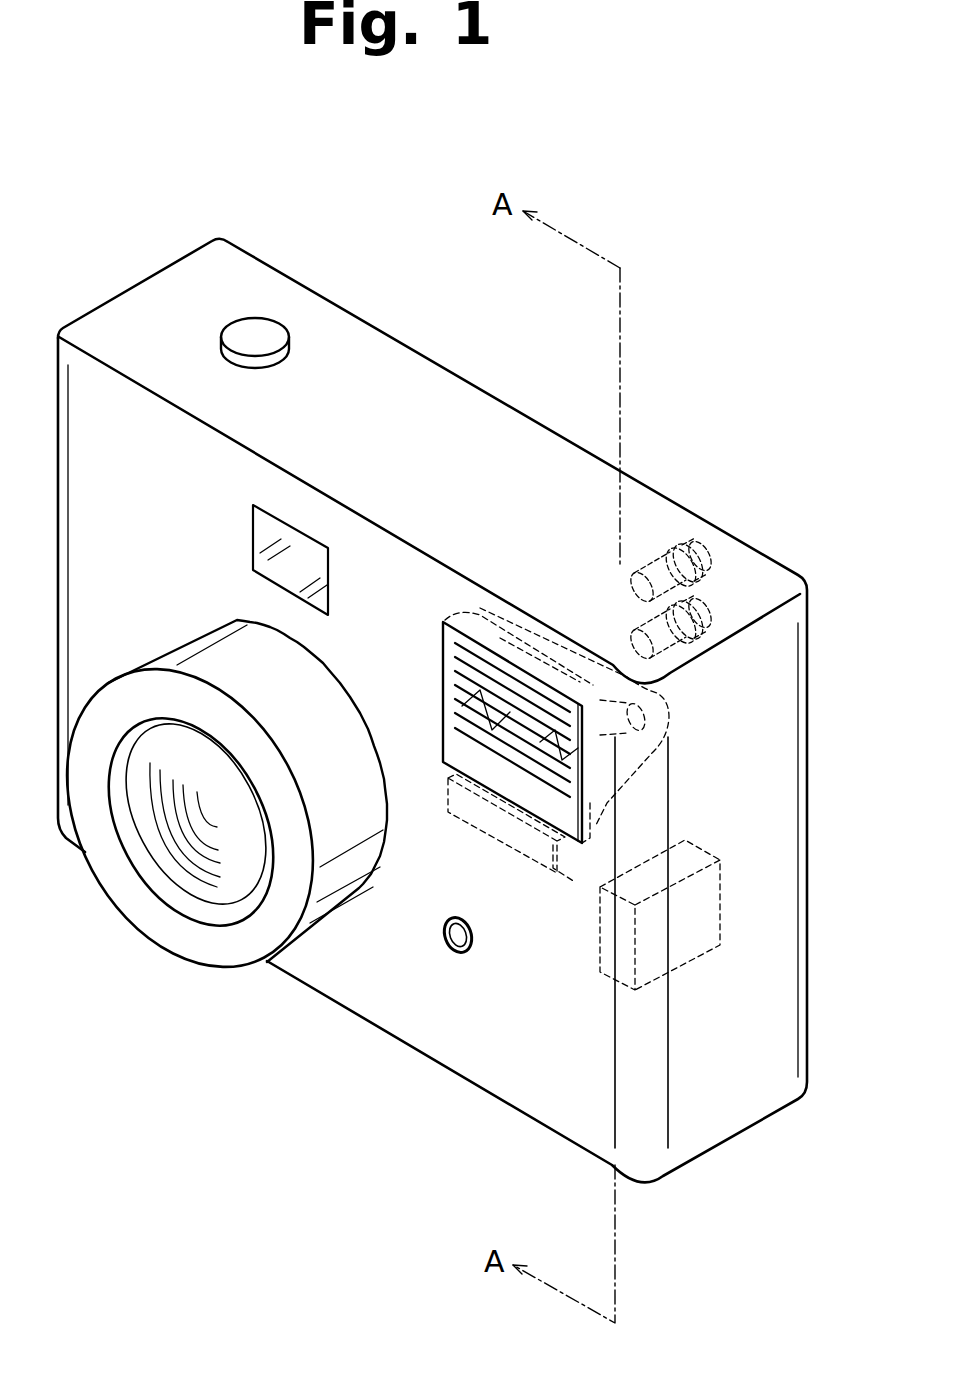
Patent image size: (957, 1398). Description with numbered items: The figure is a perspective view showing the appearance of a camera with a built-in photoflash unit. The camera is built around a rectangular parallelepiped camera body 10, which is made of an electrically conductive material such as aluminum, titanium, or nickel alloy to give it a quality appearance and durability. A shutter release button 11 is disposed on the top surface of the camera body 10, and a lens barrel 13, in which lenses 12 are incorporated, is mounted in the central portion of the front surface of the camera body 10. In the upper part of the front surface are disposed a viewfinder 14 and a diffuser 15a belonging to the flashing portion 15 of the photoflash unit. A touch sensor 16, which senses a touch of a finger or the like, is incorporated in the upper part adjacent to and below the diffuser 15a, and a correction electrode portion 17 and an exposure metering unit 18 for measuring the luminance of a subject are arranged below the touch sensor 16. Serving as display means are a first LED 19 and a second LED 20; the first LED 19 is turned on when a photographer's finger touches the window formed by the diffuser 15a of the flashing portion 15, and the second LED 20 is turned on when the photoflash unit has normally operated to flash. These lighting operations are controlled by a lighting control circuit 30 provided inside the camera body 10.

The camera body 10 is at (517, 427).
The shutter release button 11 is at (262, 325).
The lenses 12 is at (235, 890).
The lens barrel 13 is at (323, 898).
The viewfinder 14 is at (303, 550).
The flashing portion 15 is at (663, 777).
The diffuser 15a is at (443, 650).
The touch sensor 16 is at (567, 838).
The correction electrode portion 17 is at (500, 845).
The exposure metering unit 18 is at (447, 941).
The first LED 19 is at (697, 552).
The second LED 20 is at (697, 614).
The lighting control circuit 30 is at (722, 905).